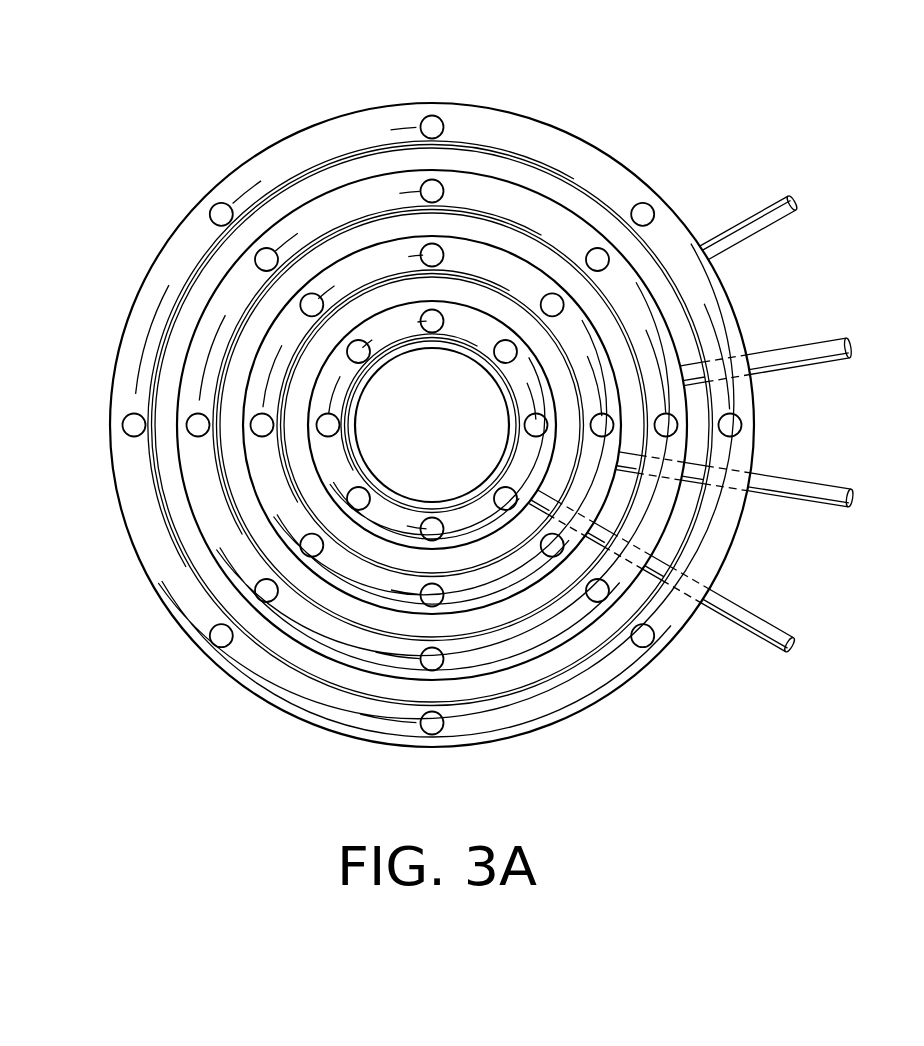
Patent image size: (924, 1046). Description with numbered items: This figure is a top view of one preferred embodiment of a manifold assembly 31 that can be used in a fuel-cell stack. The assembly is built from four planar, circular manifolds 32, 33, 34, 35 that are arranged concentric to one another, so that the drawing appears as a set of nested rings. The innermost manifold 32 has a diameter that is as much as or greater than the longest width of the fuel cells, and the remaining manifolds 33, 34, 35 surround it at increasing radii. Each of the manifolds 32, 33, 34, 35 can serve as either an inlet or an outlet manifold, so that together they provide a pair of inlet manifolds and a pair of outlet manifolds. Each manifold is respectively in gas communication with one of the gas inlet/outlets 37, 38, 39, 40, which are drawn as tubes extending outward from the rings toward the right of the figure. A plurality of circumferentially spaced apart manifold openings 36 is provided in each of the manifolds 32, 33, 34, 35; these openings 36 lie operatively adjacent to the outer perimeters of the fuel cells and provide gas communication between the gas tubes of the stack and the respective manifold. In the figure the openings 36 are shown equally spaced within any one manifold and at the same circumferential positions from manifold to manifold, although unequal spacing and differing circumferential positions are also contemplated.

The manifold assembly 31 is at (226, 753).
The innermost manifold 32 is at (352, 476).
The manifold 33 is at (300, 513).
The manifold 34 is at (238, 536).
The manifold 35 is at (178, 559).
The manifold openings 36 is at (233, 223).
The gas inlet/outlet 37 is at (768, 638).
The gas inlet/outlet 38 is at (818, 503).
The gas inlet/outlet 39 is at (826, 362).
The gas inlet/outlet 40 is at (769, 207).